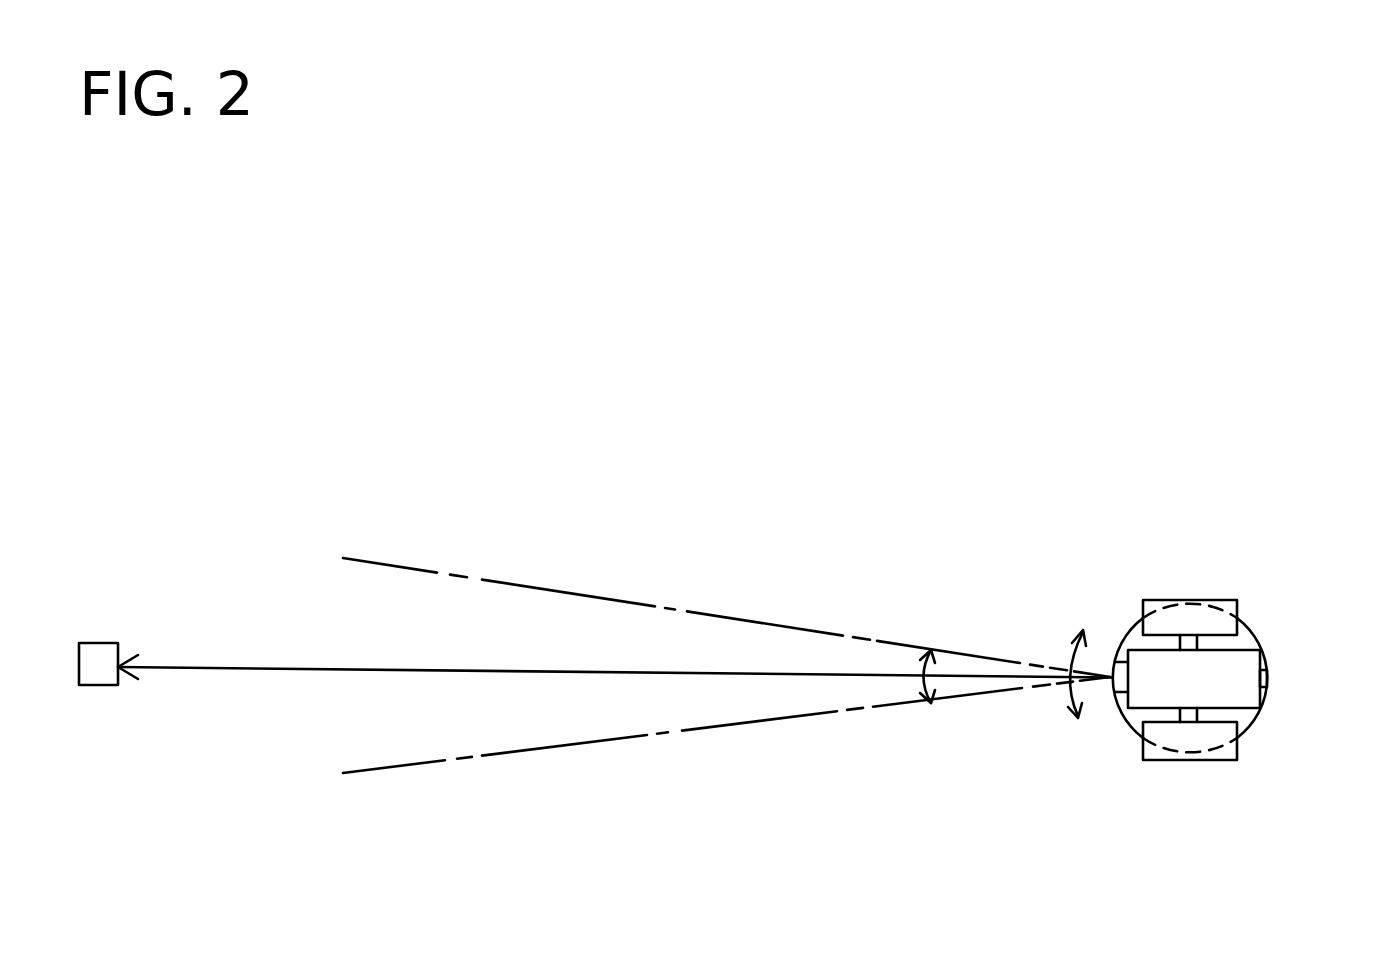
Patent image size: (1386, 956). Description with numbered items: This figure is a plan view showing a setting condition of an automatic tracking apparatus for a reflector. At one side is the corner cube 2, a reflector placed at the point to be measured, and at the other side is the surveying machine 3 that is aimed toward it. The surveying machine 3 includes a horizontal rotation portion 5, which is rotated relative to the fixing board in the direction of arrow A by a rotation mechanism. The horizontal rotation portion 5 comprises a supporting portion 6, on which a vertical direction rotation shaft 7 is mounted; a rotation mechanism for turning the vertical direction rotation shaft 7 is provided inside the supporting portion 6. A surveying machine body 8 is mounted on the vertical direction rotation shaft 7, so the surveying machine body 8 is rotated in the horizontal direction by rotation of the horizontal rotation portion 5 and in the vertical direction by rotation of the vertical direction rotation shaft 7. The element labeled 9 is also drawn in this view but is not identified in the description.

The corner cube 2 is at (100, 647).
The surveying machine 3 is at (1224, 653).
The horizontal rotation portion 5 is at (1270, 650).
The supporting portion 6 is at (1190, 616).
The vertical direction rotation shaft 7 is at (1197, 648).
The surveying machine body 8 is at (1240, 696).
The lens 9 is at (1120, 703).
The arrow A is at (1053, 689).